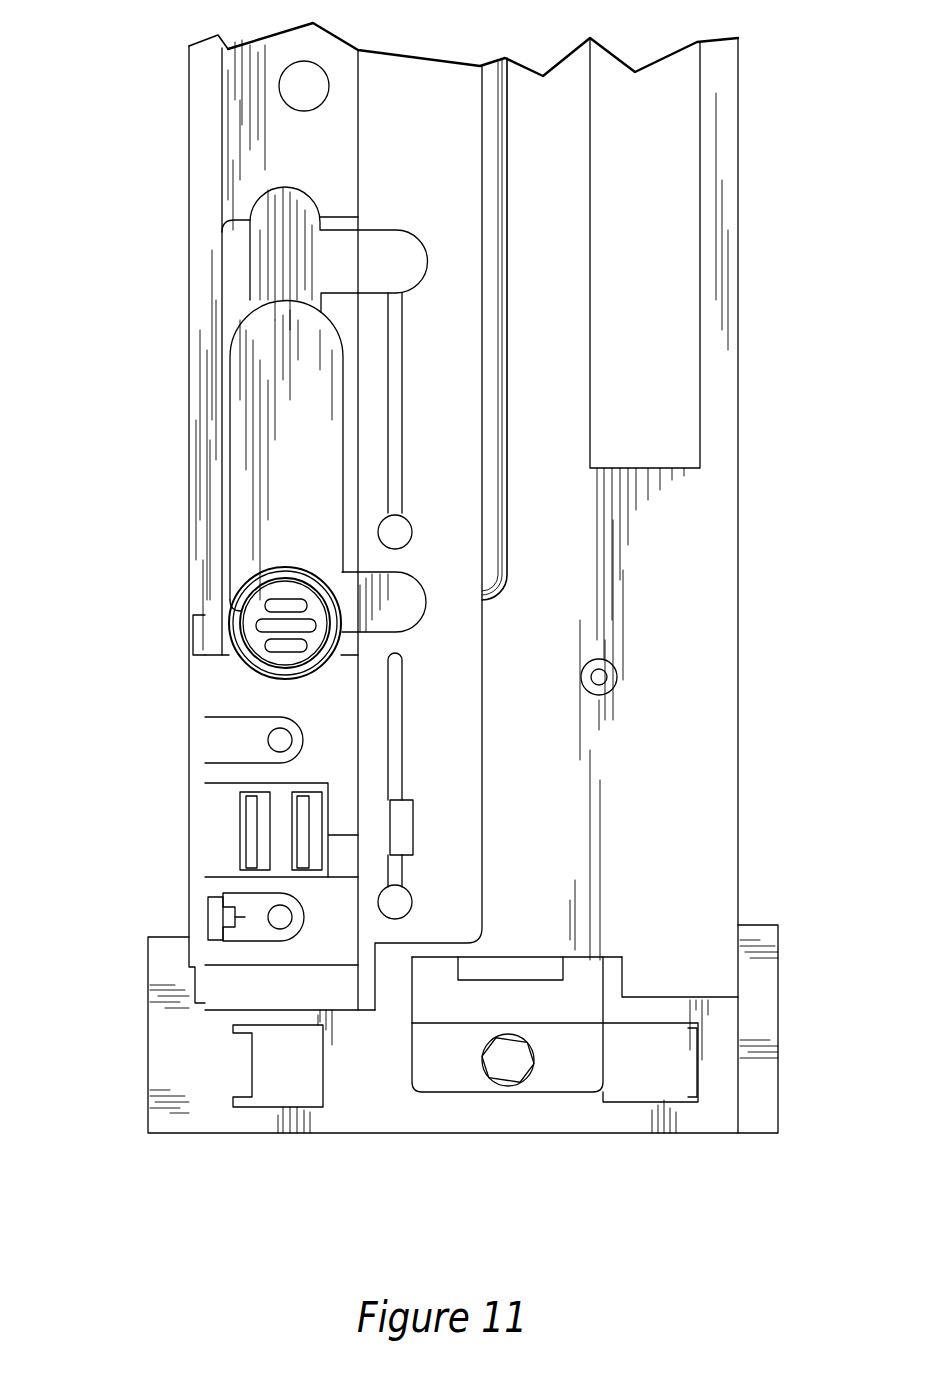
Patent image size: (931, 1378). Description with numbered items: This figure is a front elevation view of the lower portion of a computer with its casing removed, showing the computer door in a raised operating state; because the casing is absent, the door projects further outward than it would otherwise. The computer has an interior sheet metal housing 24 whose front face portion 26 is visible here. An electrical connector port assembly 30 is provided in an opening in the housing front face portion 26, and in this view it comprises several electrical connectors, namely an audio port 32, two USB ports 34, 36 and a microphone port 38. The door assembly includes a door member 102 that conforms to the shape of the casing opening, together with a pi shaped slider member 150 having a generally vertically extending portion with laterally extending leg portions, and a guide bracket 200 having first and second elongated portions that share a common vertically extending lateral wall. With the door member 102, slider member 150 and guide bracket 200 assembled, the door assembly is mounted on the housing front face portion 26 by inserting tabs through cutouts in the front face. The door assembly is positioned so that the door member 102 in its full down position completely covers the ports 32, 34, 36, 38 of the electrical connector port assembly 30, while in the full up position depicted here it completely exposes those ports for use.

The guide bracket 200 is at (420, 108).
The interior sheet metal housing 24 is at (185, 389).
The slider member 150 is at (256, 235).
The door member 102 is at (320, 436).
The front face portion 26 is at (676, 790).
The electrical connector port assembly 30 is at (340, 738).
The audio port 32 is at (252, 740).
The USB port 34 is at (248, 830).
The USB port 36 is at (303, 845).
The microphone port 38 is at (245, 917).